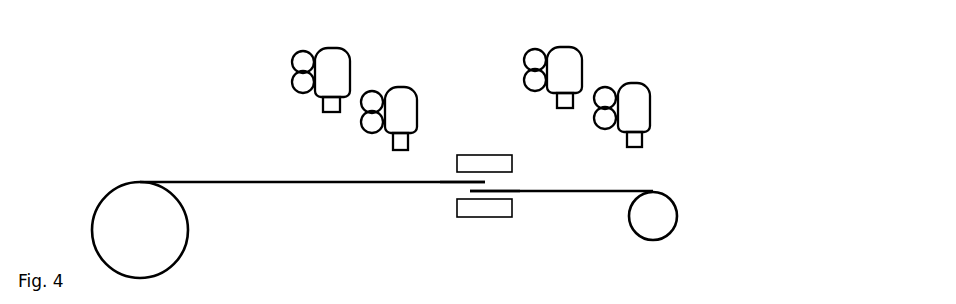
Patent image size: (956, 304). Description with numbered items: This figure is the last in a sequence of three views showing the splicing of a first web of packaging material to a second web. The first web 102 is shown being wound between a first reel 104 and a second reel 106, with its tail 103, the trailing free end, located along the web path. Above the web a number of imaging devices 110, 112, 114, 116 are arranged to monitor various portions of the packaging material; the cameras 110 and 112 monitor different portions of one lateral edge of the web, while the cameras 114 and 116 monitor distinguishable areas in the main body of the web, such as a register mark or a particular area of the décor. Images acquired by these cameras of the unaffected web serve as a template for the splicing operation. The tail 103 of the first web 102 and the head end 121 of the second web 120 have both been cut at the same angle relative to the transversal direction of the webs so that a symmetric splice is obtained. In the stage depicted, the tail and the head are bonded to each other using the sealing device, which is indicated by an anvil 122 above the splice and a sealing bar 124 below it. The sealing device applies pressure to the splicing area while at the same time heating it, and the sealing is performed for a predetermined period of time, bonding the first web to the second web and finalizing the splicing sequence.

The first web 102 is at (214, 182).
The tail 103 is at (470, 183).
The first reel 104 is at (650, 240).
The second reel 106 is at (188, 242).
The imaging device 110 is at (335, 48).
The imaging device 112 is at (555, 48).
The imaging device 114 is at (412, 90).
The imaging device 116 is at (650, 100).
The second web 120 is at (573, 193).
The head end 121 is at (485, 190).
The anvil 122 is at (472, 154).
The sealing bar 124 is at (480, 217).